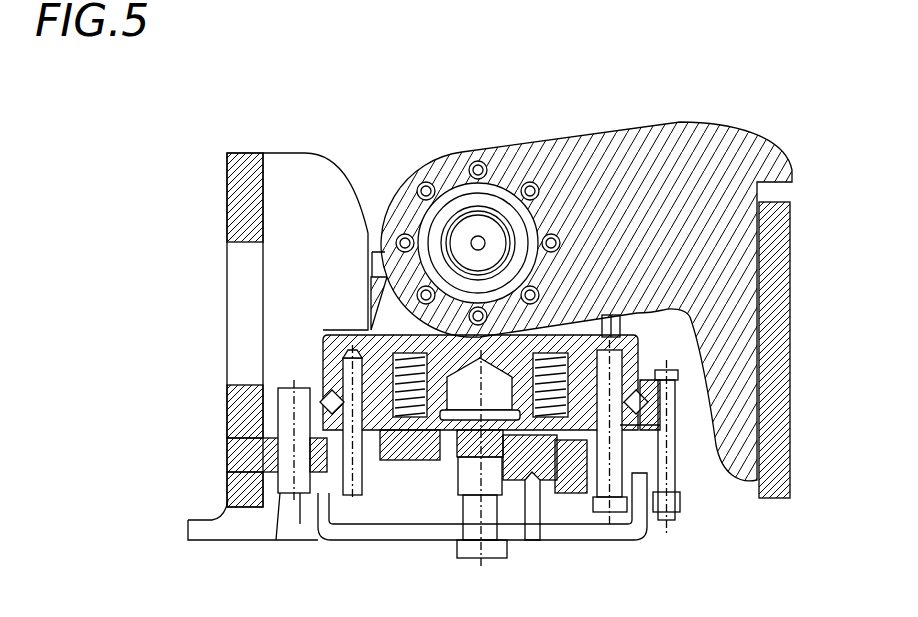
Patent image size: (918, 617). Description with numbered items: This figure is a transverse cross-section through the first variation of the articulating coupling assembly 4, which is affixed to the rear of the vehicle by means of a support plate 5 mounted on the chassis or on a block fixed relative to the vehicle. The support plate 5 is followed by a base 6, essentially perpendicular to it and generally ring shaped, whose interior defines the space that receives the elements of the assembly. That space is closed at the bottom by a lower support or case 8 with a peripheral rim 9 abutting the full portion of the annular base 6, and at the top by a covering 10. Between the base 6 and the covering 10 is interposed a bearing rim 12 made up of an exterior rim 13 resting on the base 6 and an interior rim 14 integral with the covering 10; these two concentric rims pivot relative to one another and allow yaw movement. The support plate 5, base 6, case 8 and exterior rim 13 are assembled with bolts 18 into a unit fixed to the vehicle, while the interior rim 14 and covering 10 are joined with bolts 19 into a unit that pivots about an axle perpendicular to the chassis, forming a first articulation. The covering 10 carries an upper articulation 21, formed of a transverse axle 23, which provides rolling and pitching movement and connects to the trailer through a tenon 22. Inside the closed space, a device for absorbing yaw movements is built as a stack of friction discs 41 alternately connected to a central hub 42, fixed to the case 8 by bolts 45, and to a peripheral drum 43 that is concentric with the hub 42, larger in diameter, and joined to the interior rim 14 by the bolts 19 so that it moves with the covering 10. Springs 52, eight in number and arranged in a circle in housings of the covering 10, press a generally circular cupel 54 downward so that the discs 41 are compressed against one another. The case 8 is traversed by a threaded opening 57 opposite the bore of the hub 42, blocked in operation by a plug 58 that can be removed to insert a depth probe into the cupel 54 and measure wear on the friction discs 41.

The articulating coupling assembly 4 is at (182, 345).
The support plate 5 is at (208, 188).
The base 6 is at (226, 457).
The case 8 is at (345, 543).
The peripheral rim 9 is at (276, 495).
The covering 10 is at (353, 293).
The bearing rim 12 is at (272, 407).
The exterior rim 13 is at (645, 428).
The interior rim 14 is at (632, 362).
The bolts 18 is at (665, 505).
The bolts 19 is at (610, 522).
The upper articulation 21 is at (446, 143).
The tenon 22 is at (581, 272).
The transverse axle 23 is at (482, 237).
The friction discs 41 is at (572, 485).
The central hub 42 is at (396, 490).
The peripheral drum 43 is at (318, 492).
The bolts 45 is at (565, 488).
The springs 52 is at (322, 330).
The cupel 54 is at (290, 386).
The opening 57 is at (468, 495).
The plug 58 is at (498, 552).